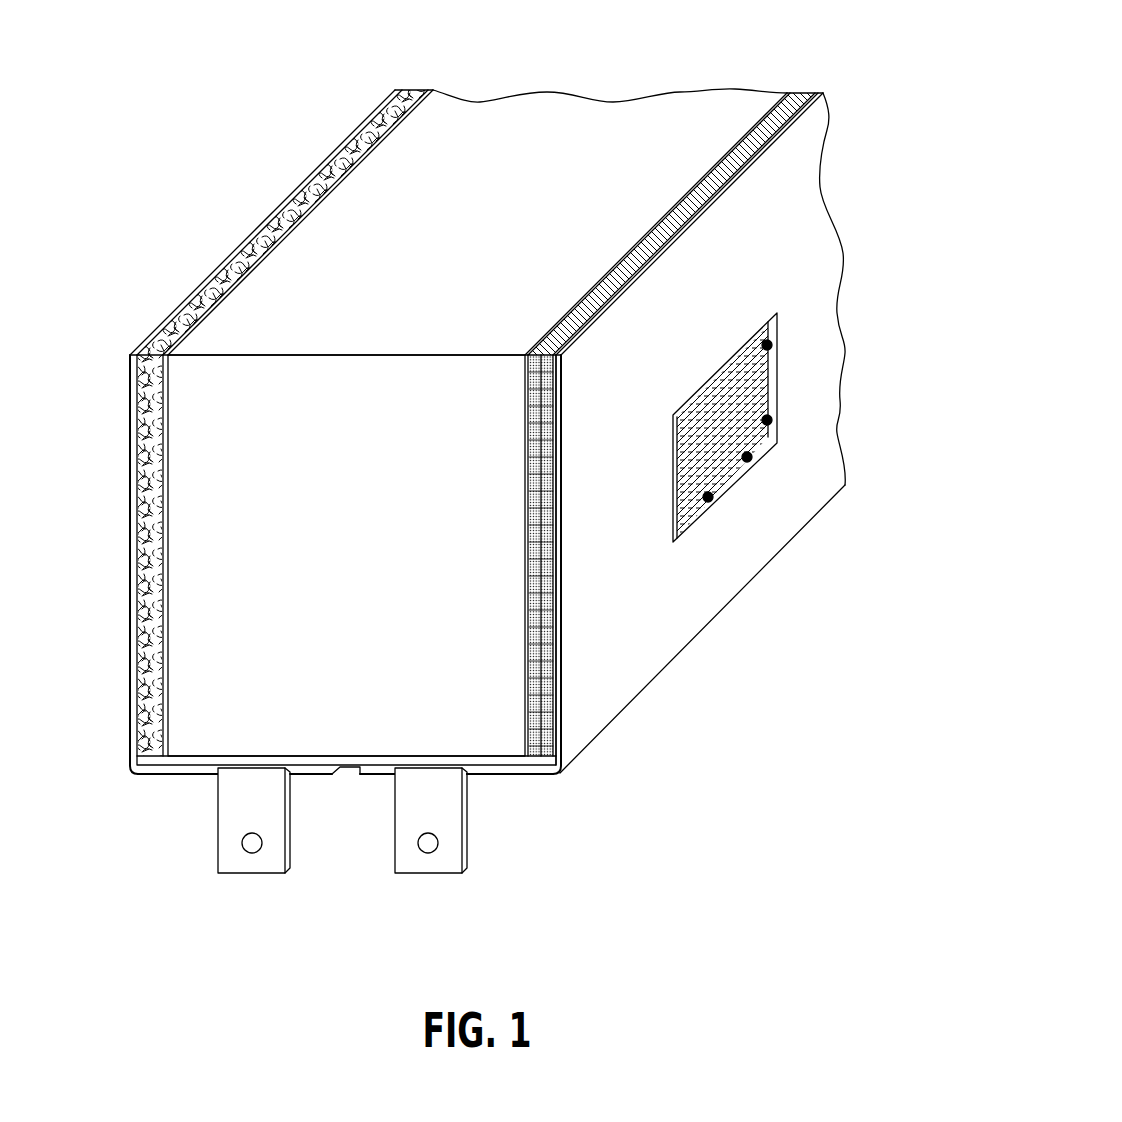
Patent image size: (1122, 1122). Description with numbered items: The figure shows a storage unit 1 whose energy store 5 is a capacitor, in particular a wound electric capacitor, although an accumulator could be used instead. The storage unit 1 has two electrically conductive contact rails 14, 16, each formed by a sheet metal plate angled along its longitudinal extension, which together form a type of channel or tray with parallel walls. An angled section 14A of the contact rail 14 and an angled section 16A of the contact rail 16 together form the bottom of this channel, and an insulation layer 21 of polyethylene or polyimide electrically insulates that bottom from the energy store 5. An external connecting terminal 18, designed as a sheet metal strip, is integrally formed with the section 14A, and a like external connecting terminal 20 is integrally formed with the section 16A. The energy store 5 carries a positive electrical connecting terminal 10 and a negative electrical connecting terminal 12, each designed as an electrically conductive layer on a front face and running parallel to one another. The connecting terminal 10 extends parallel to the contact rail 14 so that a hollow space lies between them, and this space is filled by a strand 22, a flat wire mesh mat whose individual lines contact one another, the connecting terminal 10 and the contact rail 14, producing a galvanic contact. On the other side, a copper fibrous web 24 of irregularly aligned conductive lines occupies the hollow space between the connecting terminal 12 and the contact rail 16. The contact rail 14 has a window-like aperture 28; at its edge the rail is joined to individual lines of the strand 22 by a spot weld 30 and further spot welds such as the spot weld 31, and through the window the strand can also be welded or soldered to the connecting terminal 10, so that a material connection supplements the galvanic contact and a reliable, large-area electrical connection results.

The storage unit 1 is at (194, 158).
The energy store 5 is at (215, 640).
The positive electrical connecting terminal 10 is at (527, 578).
The negative electrical connecting terminal 12 is at (163, 580).
The contact rail 14 is at (558, 455).
The angled section 14A is at (517, 774).
The contact rail 16 is at (135, 455).
The angled section 16A is at (178, 774).
The external connecting terminal 18 is at (428, 863).
The external connecting terminal 20 is at (252, 863).
The insulation layer 21 is at (348, 765).
The strand 22 is at (553, 515).
The electrically conductive fibrous web 24 is at (138, 515).
The aperture 28 is at (773, 407).
The spot weld 30 is at (750, 460).
The spot weld 31 is at (712, 500).